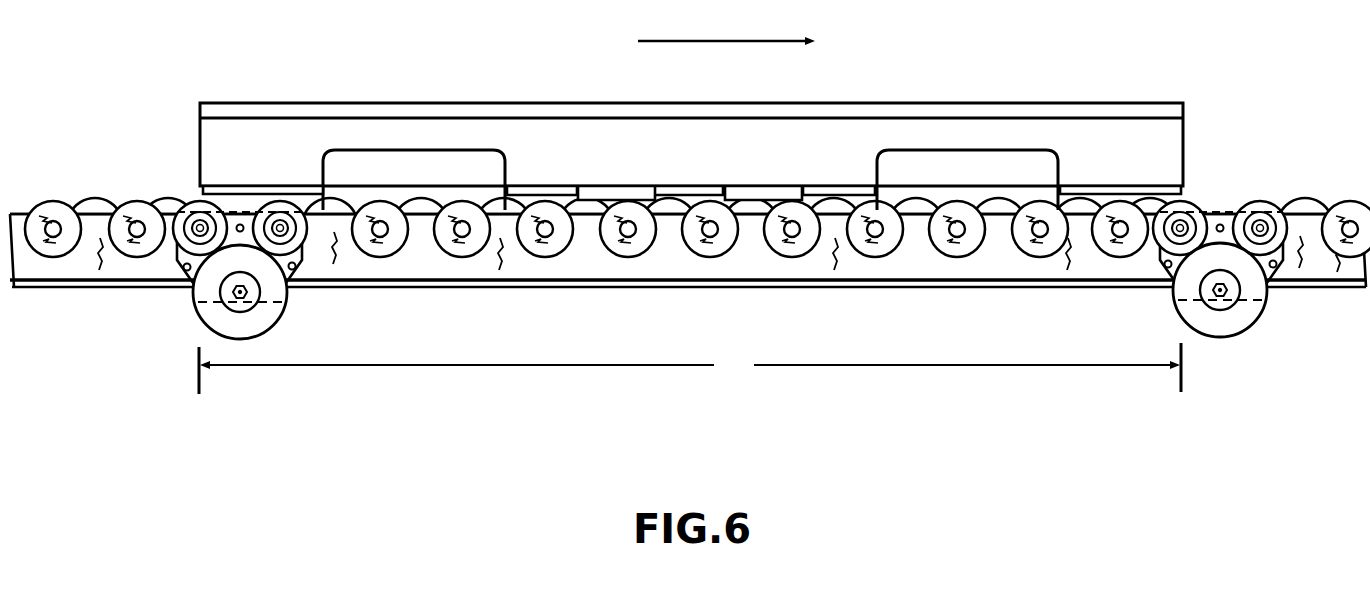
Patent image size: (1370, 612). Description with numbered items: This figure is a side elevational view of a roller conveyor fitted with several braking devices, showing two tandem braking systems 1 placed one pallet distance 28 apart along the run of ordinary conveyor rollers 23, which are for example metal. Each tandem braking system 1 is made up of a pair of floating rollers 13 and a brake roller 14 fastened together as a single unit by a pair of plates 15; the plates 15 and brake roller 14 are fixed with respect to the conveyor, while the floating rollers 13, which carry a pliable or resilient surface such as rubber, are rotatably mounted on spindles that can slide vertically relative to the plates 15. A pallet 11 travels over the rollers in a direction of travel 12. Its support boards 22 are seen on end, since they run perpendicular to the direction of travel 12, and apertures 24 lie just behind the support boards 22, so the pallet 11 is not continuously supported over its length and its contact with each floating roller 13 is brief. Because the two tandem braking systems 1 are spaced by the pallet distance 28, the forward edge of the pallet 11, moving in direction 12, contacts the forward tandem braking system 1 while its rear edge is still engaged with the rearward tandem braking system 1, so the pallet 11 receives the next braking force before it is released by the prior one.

The tandem braking system 1 is at (160, 317).
The pallet 11 is at (331, 103).
The direction of travel 12 is at (726, 29).
The floating rollers 13 is at (186, 203).
The brake roller 14 is at (275, 322).
The plates 15 is at (303, 268).
The support board 22 is at (309, 185).
The conveyor rollers 23 is at (85, 200).
The aperture 24 is at (464, 165).
The pallet distance 28 is at (690, 368).